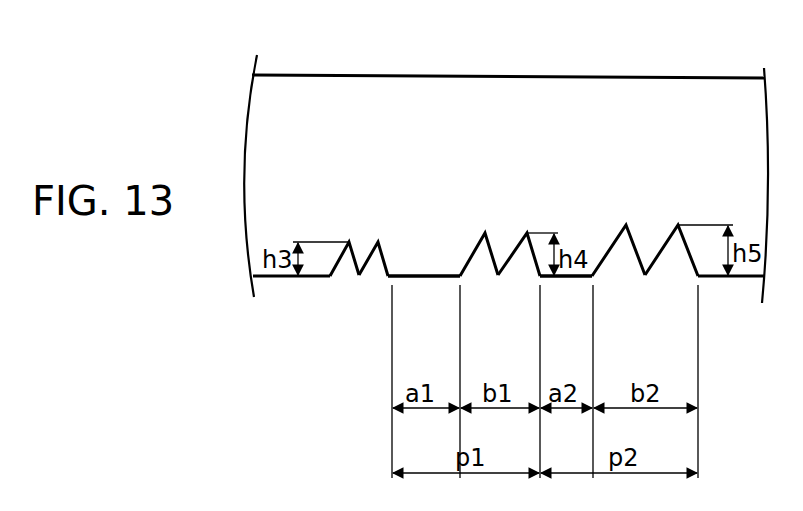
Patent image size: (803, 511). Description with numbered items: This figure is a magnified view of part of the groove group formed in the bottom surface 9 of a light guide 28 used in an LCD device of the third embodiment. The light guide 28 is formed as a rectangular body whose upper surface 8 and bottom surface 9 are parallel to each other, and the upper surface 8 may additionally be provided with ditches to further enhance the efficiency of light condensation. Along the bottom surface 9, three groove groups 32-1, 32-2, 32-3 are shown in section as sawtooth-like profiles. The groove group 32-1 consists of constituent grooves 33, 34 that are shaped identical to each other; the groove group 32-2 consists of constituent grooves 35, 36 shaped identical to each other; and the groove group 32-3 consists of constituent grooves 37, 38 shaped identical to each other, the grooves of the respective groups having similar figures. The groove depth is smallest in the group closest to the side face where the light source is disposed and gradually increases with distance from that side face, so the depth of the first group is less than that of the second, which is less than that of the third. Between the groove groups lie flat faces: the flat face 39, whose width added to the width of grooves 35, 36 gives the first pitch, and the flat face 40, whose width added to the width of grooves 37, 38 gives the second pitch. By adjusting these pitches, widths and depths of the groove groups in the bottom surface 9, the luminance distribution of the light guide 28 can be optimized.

The upper surface 8 is at (342, 75).
The light guide 28 is at (412, 112).
The bottom surface 9 is at (282, 277).
The groove group 32-1 is at (340, 267).
The groove group 32-2 is at (500, 260).
The groove group 32-3 is at (649, 259).
The constituent groove 33 is at (348, 263).
The constituent groove 34 is at (380, 263).
The constituent groove 35 is at (485, 255).
The constituent groove 36 is at (525, 250).
The constituent groove 37 is at (623, 242).
The constituent groove 38 is at (678, 260).
The flat face 39 is at (423, 272).
The flat face 40 is at (583, 273).